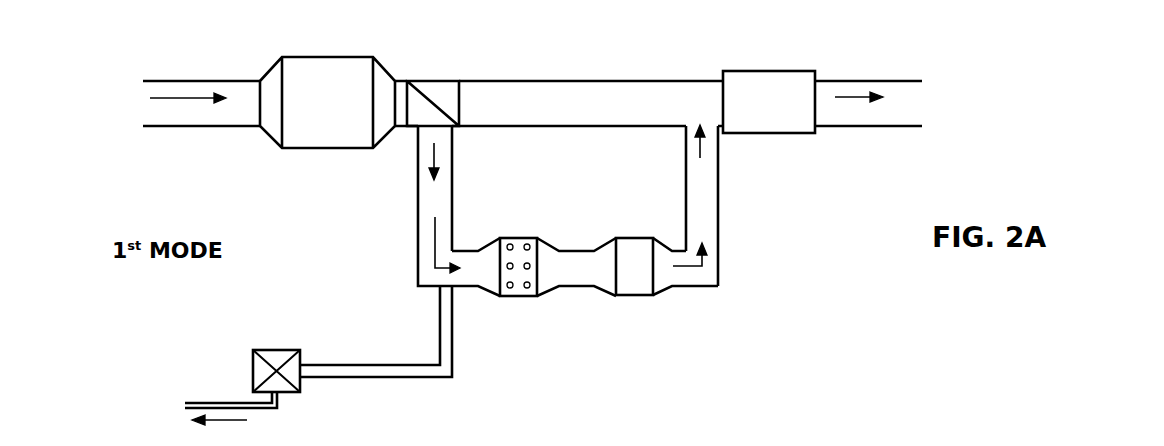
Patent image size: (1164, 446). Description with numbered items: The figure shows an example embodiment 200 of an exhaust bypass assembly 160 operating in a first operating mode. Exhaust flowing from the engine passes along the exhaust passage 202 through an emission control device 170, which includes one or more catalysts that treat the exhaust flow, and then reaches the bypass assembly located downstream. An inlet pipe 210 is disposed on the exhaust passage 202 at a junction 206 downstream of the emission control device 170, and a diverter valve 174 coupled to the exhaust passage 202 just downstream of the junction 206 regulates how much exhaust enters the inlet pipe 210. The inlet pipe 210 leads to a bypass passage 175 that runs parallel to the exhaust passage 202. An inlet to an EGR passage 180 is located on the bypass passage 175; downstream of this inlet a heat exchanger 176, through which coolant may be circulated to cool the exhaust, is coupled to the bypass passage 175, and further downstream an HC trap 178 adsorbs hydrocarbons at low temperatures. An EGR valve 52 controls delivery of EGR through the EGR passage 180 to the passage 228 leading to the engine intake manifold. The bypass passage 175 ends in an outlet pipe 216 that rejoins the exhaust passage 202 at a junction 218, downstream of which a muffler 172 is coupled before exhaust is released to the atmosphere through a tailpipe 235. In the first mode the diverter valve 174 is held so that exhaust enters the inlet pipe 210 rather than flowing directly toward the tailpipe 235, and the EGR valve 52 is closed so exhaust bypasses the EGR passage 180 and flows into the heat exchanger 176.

The EGR valve 52 is at (277, 350).
The exhaust bypass assembly 160 is at (984, 104).
The emission control device 170 is at (290, 150).
The muffler 172 is at (800, 134).
The diverter valve 174 is at (441, 80).
The bypass passage 175 is at (578, 288).
The heat exchanger 176 is at (512, 238).
The HC trap 178 is at (625, 238).
The EGR passage 180 is at (418, 378).
The exhaust bypass assembly embodiment 200 is at (1077, 80).
The exhaust passage 202 is at (152, 128).
The junction 206 is at (407, 127).
The inlet pipe 210 is at (418, 233).
The outlet pipe 216 is at (718, 228).
The junction 218 is at (721, 134).
The passage leading to engine intake manifold 228 is at (272, 410).
The tailpipe 235 is at (900, 127).